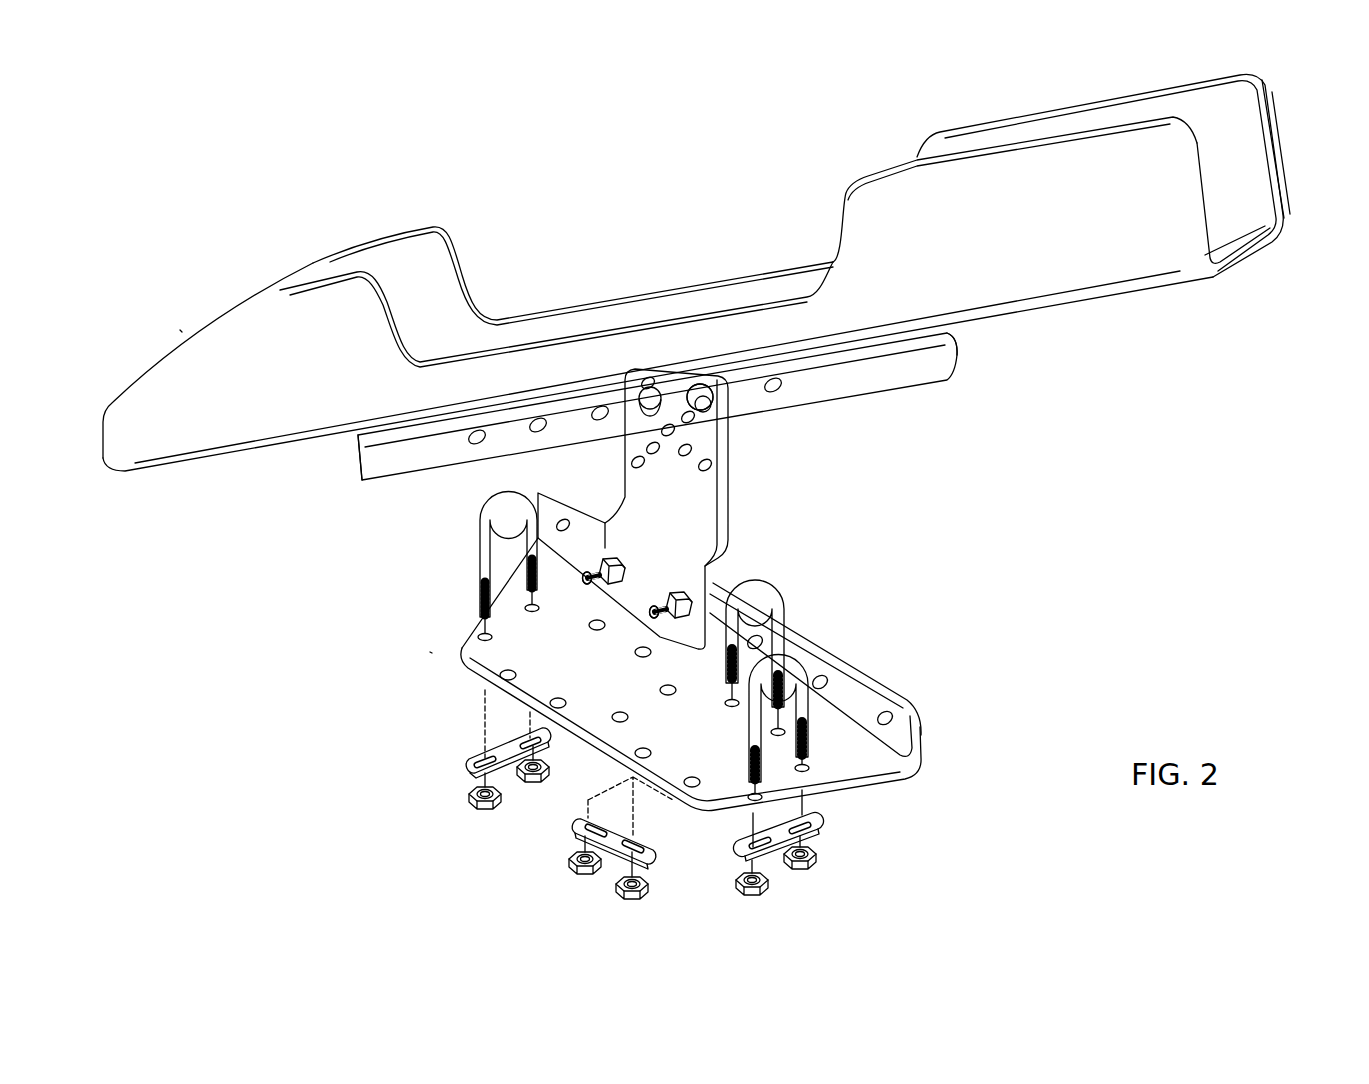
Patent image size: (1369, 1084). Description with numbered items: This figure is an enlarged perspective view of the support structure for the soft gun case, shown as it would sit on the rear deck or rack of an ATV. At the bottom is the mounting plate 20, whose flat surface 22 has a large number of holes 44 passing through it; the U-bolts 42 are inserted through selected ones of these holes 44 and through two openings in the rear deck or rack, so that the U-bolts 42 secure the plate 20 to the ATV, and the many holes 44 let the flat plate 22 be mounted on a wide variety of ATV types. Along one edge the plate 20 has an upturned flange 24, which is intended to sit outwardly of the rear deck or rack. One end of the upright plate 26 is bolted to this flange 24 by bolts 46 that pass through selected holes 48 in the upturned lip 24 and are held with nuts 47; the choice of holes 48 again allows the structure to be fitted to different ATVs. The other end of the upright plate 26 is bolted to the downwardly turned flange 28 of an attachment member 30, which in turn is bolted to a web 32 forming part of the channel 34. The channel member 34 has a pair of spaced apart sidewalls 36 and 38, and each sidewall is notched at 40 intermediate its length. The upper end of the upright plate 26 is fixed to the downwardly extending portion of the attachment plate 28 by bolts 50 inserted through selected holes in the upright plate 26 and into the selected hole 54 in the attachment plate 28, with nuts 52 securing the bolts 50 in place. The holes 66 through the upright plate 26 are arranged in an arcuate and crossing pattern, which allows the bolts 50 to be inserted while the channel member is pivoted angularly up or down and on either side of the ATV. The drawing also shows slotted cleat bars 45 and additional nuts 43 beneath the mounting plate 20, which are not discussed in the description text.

The mounting plate 20 is at (420, 651).
The flat surface 22 is at (659, 675).
The upturned flange 24 is at (822, 640).
The upright plate 26 is at (707, 532).
The downwardly turned flange 28 is at (679, 414).
The attachment member 30 is at (962, 338).
The web 32 is at (1243, 244).
The channel 34 is at (703, 272).
The sidewall 36 is at (350, 252).
The sidewall 38 is at (278, 379).
The notch 40 is at (618, 328).
The U-bolts 42 is at (776, 645).
The nuts 43 is at (616, 893).
The holes 44 is at (597, 631).
The slotted cleats 45 is at (465, 762).
The bolts 46 is at (590, 582).
The nuts 47 is at (620, 560).
The holes 48 is at (557, 527).
The bolts 50 is at (708, 414).
The nuts 52 is at (713, 398).
The hole 54 is at (358, 442).
The holes 66 is at (636, 457).